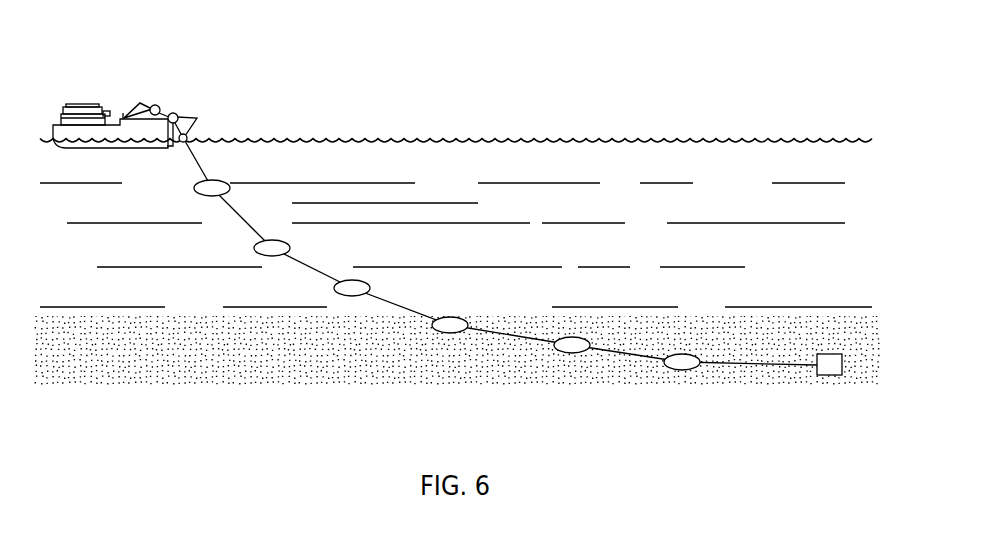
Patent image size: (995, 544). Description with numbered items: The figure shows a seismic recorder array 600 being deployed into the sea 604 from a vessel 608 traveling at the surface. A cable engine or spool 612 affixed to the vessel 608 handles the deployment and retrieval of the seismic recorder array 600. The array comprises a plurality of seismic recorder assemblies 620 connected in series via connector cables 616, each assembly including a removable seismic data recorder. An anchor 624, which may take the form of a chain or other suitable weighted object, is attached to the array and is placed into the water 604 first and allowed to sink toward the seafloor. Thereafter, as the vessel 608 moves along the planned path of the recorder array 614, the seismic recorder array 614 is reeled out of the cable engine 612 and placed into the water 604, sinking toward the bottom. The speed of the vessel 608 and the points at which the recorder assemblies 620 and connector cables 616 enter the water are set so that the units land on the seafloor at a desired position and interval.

The seismic recorder array 600 is at (604, 91).
The sea 604 is at (641, 202).
The vessel 608 is at (72, 105).
The cable engine 612 is at (123, 113).
The recorder array 614 is at (190, 153).
The connector cable 616 is at (230, 209).
The seismic recorder assembly 620 is at (291, 248).
The anchor 624 is at (813, 376).